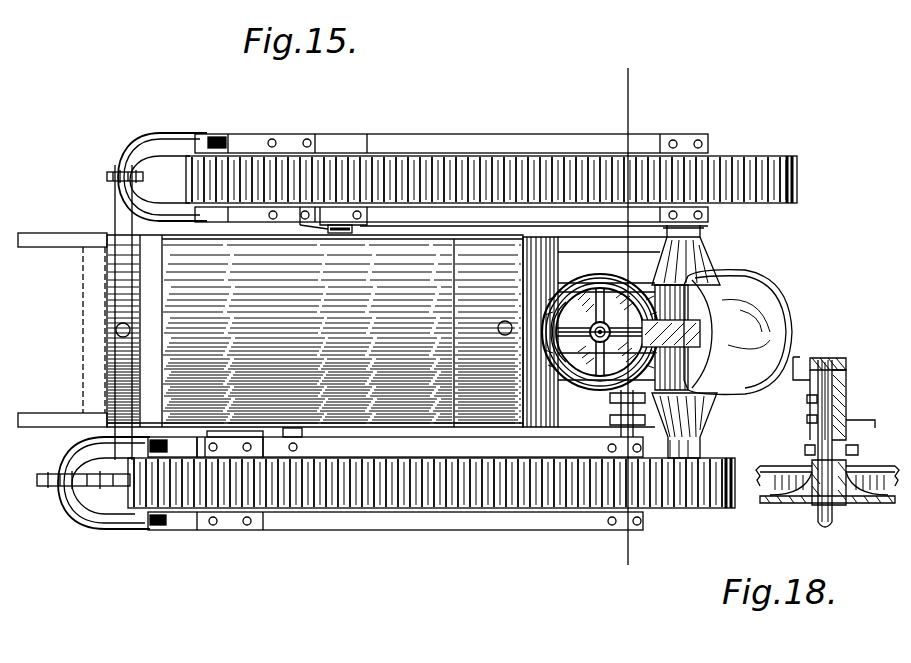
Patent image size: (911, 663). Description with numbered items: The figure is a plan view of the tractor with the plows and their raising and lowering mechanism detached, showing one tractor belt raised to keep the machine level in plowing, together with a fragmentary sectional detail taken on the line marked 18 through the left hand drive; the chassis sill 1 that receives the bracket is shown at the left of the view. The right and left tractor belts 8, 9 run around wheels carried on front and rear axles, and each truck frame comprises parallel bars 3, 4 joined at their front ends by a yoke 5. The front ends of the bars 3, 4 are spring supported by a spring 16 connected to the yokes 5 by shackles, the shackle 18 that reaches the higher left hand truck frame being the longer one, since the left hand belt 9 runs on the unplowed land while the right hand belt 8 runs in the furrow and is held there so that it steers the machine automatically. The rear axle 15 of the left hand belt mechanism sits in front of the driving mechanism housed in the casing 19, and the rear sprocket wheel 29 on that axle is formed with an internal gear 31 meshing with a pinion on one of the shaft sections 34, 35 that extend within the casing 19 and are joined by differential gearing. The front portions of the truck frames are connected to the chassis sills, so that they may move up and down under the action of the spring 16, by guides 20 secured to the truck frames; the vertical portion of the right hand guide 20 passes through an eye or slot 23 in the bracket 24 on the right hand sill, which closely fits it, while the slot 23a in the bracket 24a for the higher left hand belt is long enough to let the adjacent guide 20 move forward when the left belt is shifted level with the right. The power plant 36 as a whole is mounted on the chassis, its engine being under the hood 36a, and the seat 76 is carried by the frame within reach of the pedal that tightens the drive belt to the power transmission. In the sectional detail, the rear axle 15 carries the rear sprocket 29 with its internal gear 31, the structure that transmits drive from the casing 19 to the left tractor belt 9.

In FIG. 15, the frame 1 is at (48, 247).
In FIG. 15, the truck frame bar 3 is at (528, 216).
In FIG. 15, the truck frame bar 4 is at (487, 137).
In FIG. 15, the yoke 5 is at (135, 146).
In FIG. 15, the right tractor belt 8 is at (398, 166).
In FIG. 15, the left tractor belt 9 is at (300, 497).
In FIG. 18, the rear axle 15 is at (818, 512).
In FIG. 15, the spring 16 is at (127, 217).
In FIG. 15, the shackle 18 is at (625, 324).
In FIG. 15, the casing 19 is at (715, 256).
In FIG. 15, the guide 20 is at (300, 230).
In FIG. 15, the eye or slot 23 is at (328, 222).
In FIG. 15, the bracket 24 is at (342, 213).
In FIG. 15, the slot 23a is at (260, 437).
In FIG. 15, the bracket 24a is at (227, 447).
In FIG. 18, the rear sprocket wheel 29 is at (883, 503).
In FIG. 18, the internal gear 31 is at (865, 470).
In FIG. 15, the shaft section 34 is at (700, 231).
In FIG. 15, the shaft section 35 is at (690, 448).
In FIG. 15, the power plant 36 is at (92, 342).
In FIG. 15, the hood 36a is at (183, 358).
In FIG. 15, the seat 76 is at (778, 331).